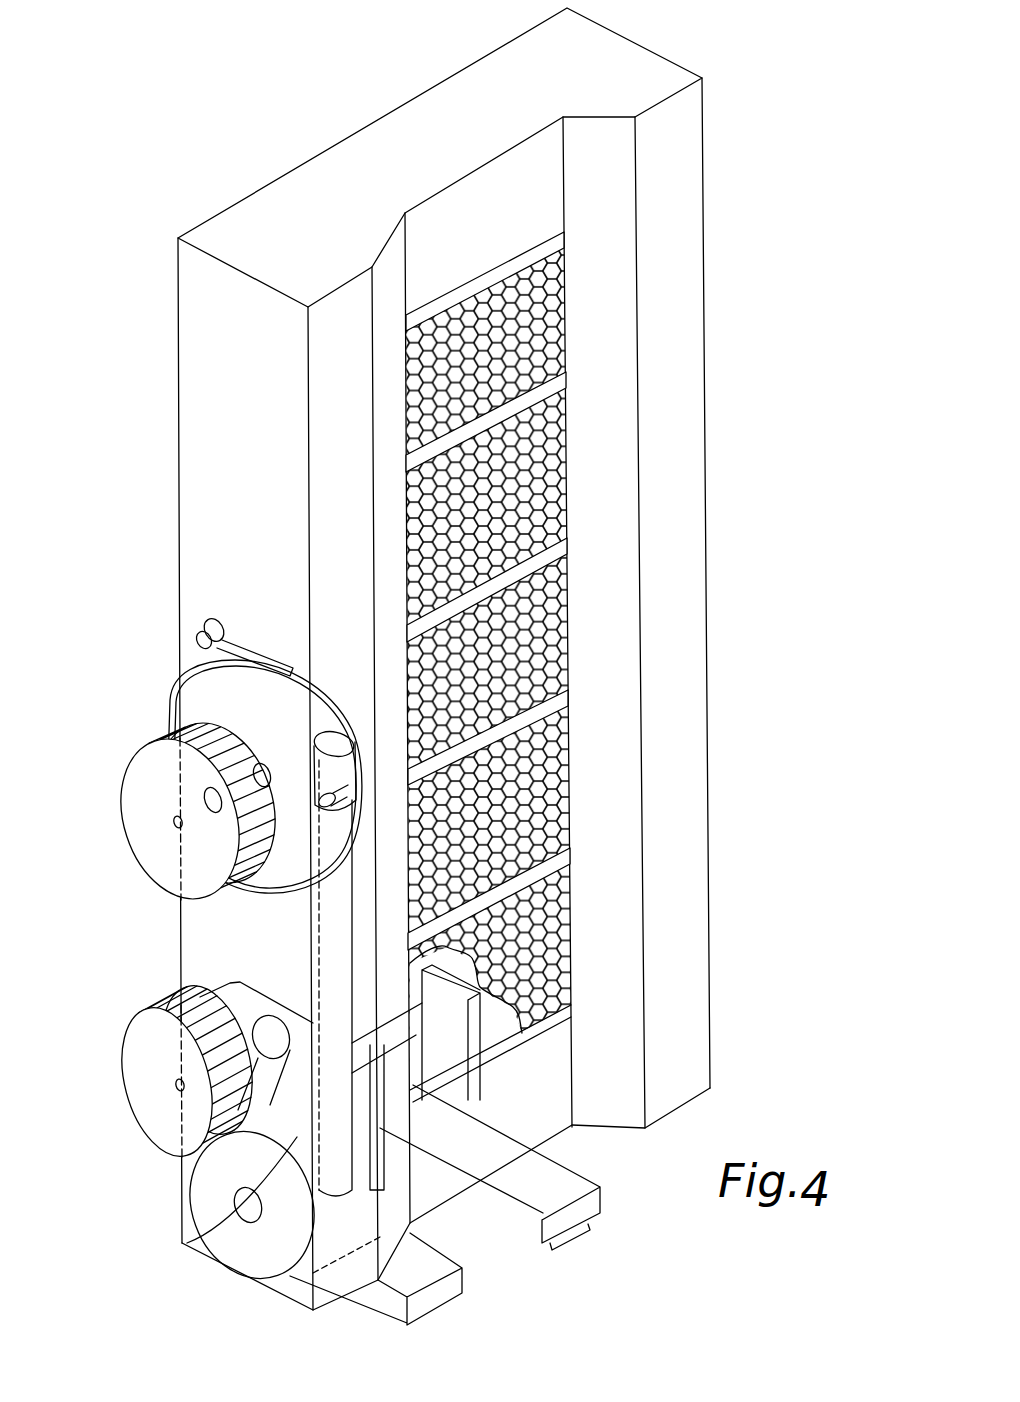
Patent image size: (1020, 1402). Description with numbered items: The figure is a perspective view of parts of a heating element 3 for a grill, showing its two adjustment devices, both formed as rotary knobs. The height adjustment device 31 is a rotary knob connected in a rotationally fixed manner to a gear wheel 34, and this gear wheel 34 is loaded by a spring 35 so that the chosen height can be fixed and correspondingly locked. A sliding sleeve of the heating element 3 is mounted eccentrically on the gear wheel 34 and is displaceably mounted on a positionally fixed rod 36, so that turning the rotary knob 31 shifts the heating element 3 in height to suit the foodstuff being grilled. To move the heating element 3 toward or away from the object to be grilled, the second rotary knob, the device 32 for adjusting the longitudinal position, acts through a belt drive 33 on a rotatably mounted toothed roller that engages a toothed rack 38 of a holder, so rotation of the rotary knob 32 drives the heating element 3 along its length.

The heating element 3 is at (273, 213).
The height adjustment device 31 is at (140, 773).
The device for adjusting the longitudinal position 32 is at (138, 1042).
The belt drive 33 is at (185, 1243).
The gear wheel 34 is at (187, 687).
The spring 35 is at (200, 637).
The positionally fixed rod 36 is at (317, 948).
The toothed rack 38 is at (577, 1237).